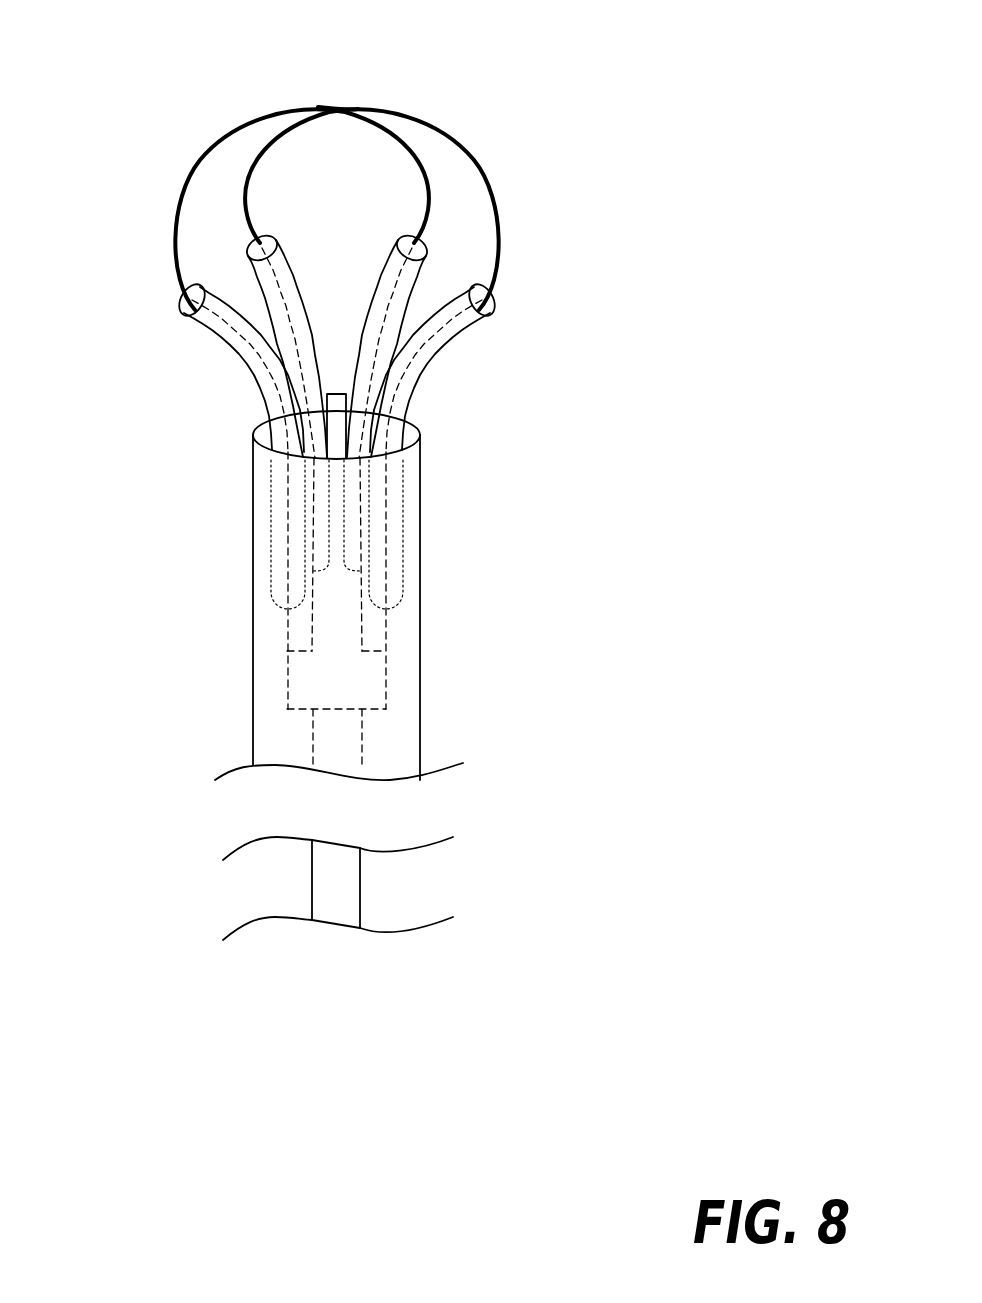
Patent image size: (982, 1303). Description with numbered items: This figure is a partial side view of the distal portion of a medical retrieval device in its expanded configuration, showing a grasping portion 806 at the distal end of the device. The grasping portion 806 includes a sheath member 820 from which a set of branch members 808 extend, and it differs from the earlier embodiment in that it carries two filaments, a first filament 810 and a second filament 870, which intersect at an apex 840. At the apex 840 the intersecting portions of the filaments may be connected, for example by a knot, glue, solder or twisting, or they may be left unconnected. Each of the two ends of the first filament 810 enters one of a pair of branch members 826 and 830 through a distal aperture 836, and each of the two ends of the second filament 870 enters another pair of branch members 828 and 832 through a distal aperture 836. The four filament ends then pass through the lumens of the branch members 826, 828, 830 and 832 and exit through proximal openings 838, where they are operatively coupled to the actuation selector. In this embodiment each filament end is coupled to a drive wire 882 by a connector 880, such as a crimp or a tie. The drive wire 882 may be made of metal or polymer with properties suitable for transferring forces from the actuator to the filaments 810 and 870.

The grasping portion 806 is at (665, 164).
The branch members 808 is at (473, 328).
The first filament 810 is at (450, 133).
The sheath member 820 is at (421, 593).
The branch member 826 is at (265, 292).
The branch member 828 is at (440, 273).
The branch member 830 is at (228, 334).
The branch member 832 is at (425, 373).
The distal apertures 836 is at (423, 241).
The proximal openings 838 is at (388, 600).
The apex 840 is at (341, 112).
The second filament 870 is at (178, 242).
The connector 880 is at (287, 692).
The drive wire 882 is at (360, 887).